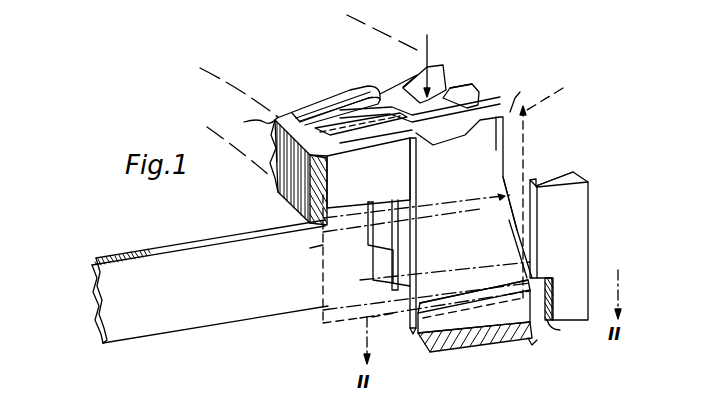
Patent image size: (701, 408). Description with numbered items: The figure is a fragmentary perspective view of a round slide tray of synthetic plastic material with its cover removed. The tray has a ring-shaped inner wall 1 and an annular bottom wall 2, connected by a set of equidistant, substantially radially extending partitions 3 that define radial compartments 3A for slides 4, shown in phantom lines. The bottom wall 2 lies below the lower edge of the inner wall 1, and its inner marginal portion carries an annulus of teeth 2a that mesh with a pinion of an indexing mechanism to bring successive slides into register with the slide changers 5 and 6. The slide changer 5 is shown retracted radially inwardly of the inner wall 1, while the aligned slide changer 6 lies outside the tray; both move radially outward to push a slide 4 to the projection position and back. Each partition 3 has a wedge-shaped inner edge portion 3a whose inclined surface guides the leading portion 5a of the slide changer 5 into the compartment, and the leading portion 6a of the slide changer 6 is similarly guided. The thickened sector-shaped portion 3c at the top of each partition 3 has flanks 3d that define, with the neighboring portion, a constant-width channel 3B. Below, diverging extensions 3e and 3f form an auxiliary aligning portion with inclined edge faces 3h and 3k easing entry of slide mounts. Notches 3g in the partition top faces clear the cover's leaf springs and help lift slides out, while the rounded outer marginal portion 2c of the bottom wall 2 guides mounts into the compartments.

The ring-shaped inner wall 1 is at (275, 103).
The channel or passage 3B is at (248, 123).
The partition 3 is at (445, 100).
The compartment 3A is at (517, 113).
The notch 3g is at (465, 102).
The sector-shaped portion 3c is at (347, 110).
The side face or flank 3d is at (352, 97).
The slide 4 is at (552, 92).
The slide changer 6 is at (577, 243).
The leading portion of slide changer 6a is at (557, 175).
The edge face 3k is at (550, 297).
The extension 3e is at (547, 320).
The edge face 3h is at (487, 297).
The inner edge portion 3a is at (368, 238).
The slide changer 5 is at (273, 300).
The leading portion of slide changer 5a is at (300, 230).
The extension 3f is at (310, 248).
The annular bottom wall 2 is at (457, 352).
The teeth 2a is at (400, 330).
The outer marginal portion 2c is at (528, 343).